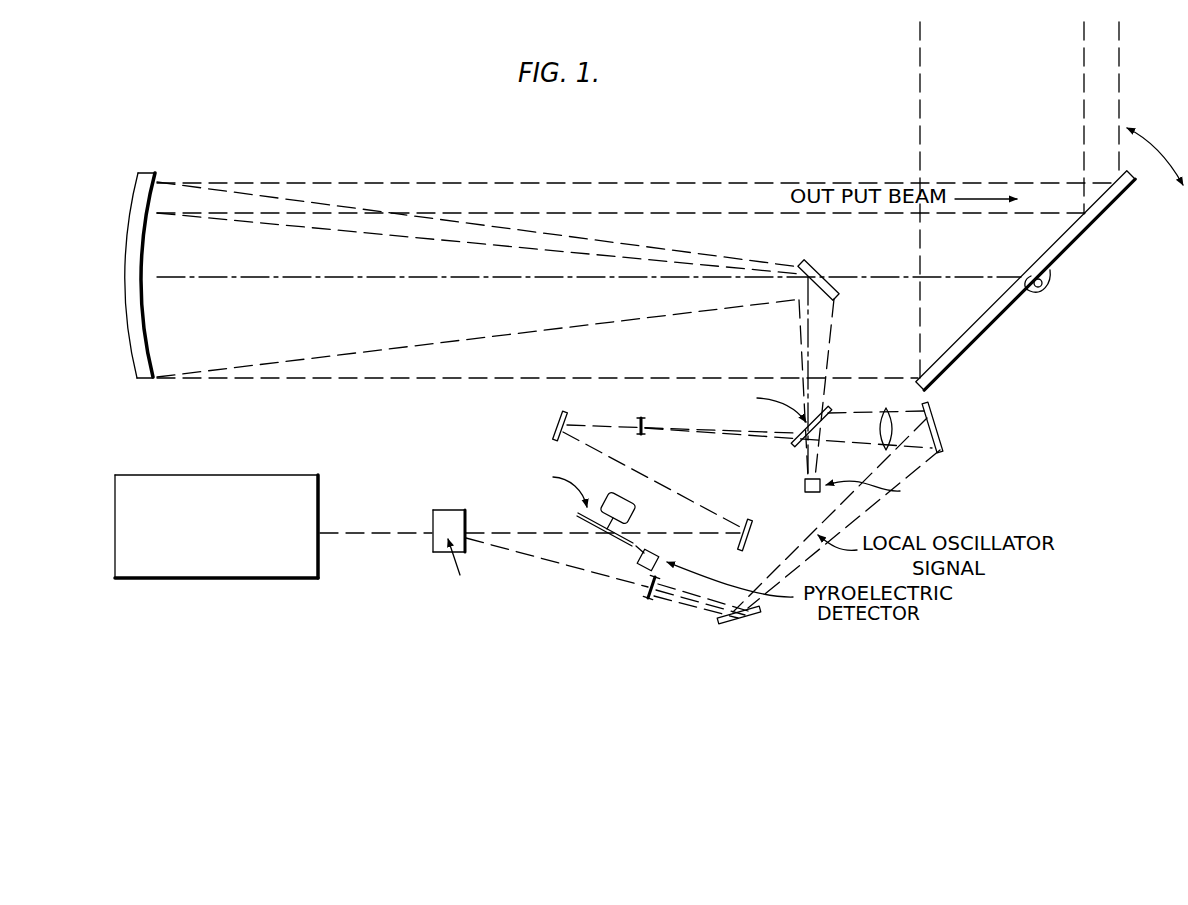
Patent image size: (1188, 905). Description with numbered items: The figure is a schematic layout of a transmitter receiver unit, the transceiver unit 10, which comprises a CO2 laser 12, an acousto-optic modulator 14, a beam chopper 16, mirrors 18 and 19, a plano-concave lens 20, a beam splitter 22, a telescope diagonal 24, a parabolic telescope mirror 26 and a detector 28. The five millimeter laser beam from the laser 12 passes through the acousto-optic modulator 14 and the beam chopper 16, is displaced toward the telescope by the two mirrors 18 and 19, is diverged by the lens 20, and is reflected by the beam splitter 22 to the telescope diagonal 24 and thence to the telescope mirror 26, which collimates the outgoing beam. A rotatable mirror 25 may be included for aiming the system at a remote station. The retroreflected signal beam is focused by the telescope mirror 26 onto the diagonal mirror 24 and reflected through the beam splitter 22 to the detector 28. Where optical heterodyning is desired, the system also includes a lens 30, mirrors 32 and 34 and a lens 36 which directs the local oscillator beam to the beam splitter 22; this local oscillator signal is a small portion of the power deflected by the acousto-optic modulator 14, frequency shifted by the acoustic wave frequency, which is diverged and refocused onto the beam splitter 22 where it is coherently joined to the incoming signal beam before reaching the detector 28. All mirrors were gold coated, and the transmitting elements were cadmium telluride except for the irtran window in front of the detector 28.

The transceiver unit 10 is at (1040, 341).
The CO2 laser 12 is at (225, 567).
The acousto-optic modulator 14 is at (435, 519).
The beam chopper 16 is at (580, 513).
The mirror 18 is at (753, 521).
The mirror 19 is at (553, 432).
The plano-concave lens 20 is at (641, 437).
The beam splitter 22 is at (826, 412).
The telescope diagonal 24 is at (810, 266).
The rotatable mirror 25 is at (1063, 246).
The parabolic mirror 26 is at (136, 353).
The detector 28 is at (806, 487).
The lens 30 is at (650, 600).
The mirror 32 is at (755, 620).
The mirror 34 is at (934, 420).
The lens 36 is at (878, 413).